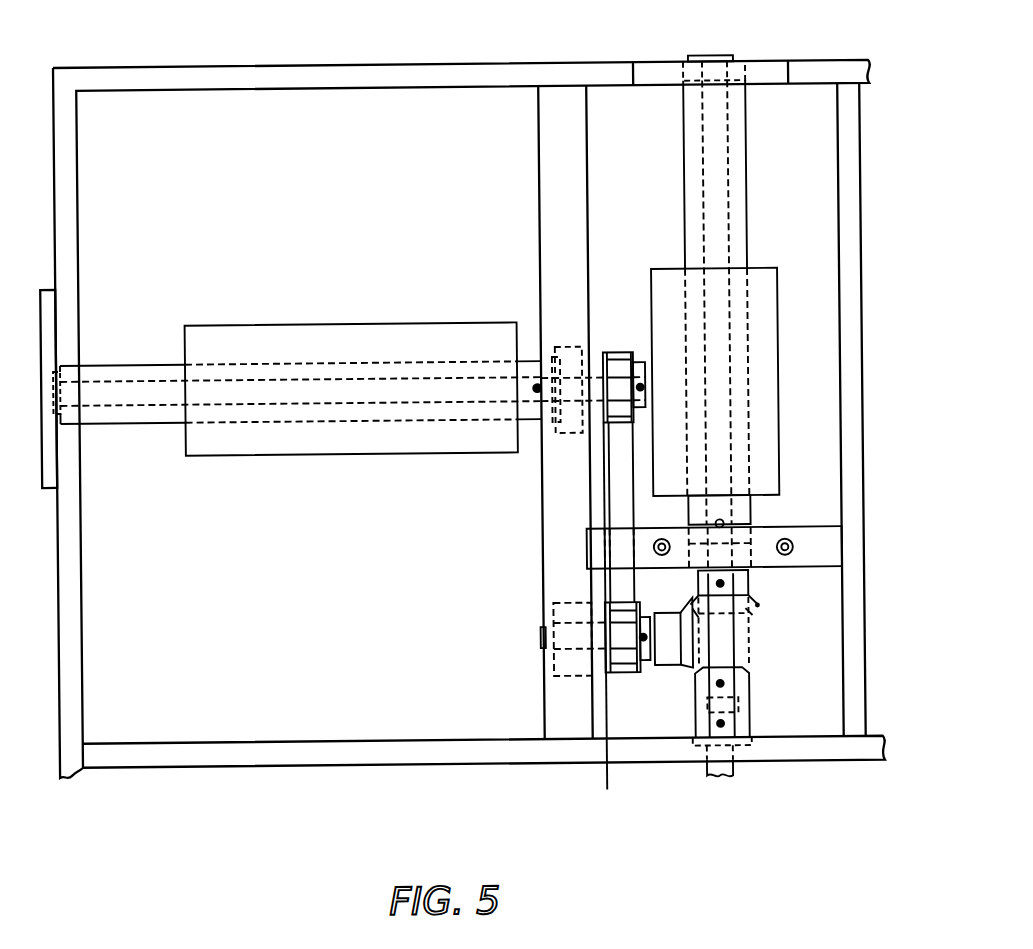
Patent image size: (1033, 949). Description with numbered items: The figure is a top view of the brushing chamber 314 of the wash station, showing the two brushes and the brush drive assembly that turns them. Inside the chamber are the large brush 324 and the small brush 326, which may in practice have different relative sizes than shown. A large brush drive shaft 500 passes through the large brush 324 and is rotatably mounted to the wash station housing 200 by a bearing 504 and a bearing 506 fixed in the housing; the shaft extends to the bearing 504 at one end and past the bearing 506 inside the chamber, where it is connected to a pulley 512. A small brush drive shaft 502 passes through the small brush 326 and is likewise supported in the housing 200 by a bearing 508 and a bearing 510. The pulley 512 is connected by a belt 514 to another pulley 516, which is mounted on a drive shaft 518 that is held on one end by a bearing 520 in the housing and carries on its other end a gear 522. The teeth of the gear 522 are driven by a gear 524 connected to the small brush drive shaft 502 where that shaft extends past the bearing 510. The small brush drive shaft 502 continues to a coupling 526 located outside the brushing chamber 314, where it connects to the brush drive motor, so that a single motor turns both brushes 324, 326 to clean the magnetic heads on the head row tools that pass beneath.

The wash station housing 200 is at (367, 69).
The brushing chamber 314 is at (385, 803).
The large brush 324 is at (311, 328).
The small brush 326 is at (764, 364).
The large brush drive shaft 500 is at (109, 428).
The small brush drive shaft 502 is at (744, 192).
The bearing 504 is at (55, 369).
The bearing 506 is at (559, 427).
The bearing 508 is at (727, 64).
The bearing 510 is at (738, 552).
The pulley 512 is at (627, 357).
The belt 514 is at (611, 503).
The pulley 516 is at (627, 679).
The drive shaft 518 is at (600, 795).
The bearing 520 is at (557, 672).
The gear 522 is at (685, 608).
The gear 524 is at (742, 619).
The coupling 526 is at (736, 727).